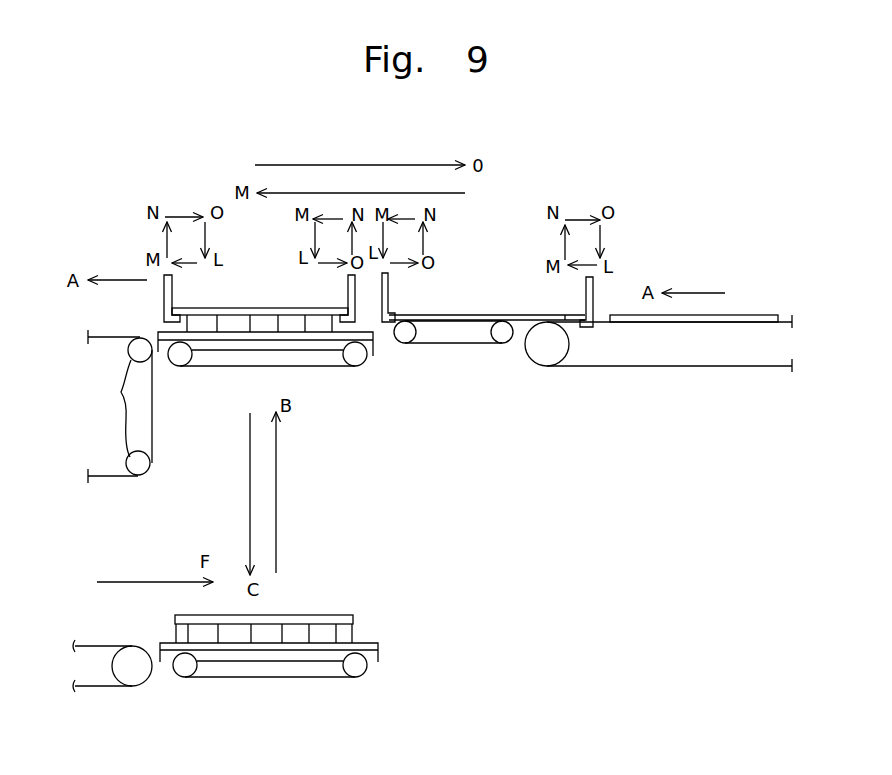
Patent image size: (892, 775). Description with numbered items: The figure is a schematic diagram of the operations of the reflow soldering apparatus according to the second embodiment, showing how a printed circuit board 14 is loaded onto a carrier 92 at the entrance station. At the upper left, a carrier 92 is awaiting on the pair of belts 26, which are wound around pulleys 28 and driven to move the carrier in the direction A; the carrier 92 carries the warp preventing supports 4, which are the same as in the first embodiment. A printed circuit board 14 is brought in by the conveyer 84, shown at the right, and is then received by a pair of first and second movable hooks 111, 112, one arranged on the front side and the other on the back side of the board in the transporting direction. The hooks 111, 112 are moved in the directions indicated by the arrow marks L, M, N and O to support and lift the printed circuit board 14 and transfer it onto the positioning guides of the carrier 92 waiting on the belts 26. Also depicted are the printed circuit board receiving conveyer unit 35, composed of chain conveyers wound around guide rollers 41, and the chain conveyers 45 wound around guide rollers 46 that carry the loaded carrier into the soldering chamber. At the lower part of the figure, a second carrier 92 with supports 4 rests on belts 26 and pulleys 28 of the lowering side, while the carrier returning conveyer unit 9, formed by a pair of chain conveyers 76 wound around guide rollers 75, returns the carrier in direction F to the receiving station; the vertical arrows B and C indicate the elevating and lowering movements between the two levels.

The warp preventing supports 4 is at (223, 329).
The carrier returning conveyer unit 9 is at (102, 644).
The printed circuit board 14 is at (285, 311).
The belts 26 is at (323, 371).
The pulleys 28 is at (345, 371).
The printed circuit board receiving conveyer unit 35 is at (440, 344).
The guide rollers 41 is at (496, 341).
The chain conveyers 45 is at (108, 337).
The guide rollers 46 is at (120, 410).
The guide rollers 75 is at (118, 667).
The chain conveyers 76 is at (85, 690).
The conveyer 84 is at (650, 367).
The carrier 92 is at (232, 358).
The first movable hook 111 is at (172, 284).
The second movable hook 112 is at (348, 290).